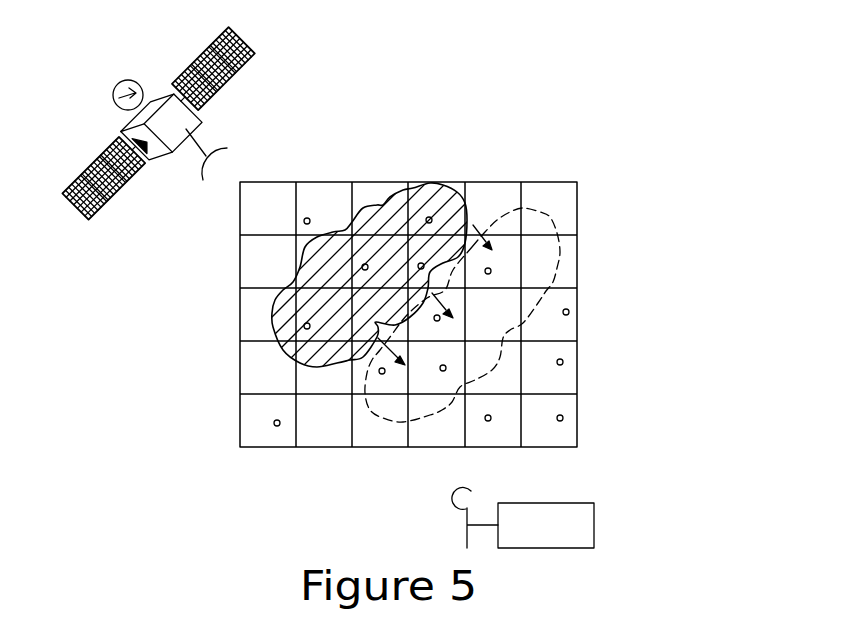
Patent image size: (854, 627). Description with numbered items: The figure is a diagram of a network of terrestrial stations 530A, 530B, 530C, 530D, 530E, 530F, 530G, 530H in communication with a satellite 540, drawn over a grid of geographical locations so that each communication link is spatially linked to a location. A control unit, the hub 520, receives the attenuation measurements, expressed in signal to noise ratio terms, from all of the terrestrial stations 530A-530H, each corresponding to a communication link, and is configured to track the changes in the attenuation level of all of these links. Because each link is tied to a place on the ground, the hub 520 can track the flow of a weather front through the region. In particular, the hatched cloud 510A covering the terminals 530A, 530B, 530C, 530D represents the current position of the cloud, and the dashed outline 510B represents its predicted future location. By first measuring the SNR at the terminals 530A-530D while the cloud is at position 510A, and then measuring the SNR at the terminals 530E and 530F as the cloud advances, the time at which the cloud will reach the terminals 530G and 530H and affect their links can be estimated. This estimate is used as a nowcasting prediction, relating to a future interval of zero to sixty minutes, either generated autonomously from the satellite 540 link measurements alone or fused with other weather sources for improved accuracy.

The satellite 540 is at (121, 82).
The cloud 510A is at (273, 314).
The future location 510B is at (562, 255).
The hub 520 is at (595, 523).
The terrestrial station 530A is at (429, 217).
The terrestrial station 530B is at (377, 253).
The terrestrial station 530C is at (468, 213).
The terrestrial station 530D is at (304, 327).
The terrestrial station 530E is at (488, 268).
The terrestrial station 530F is at (380, 373).
The terrestrial station 530G is at (569, 311).
The terrestrial station 530H is at (563, 361).